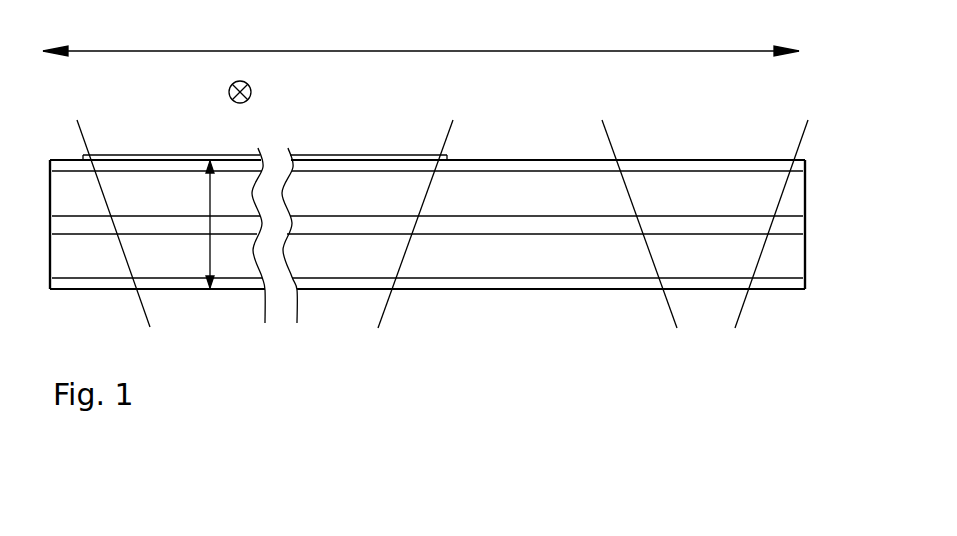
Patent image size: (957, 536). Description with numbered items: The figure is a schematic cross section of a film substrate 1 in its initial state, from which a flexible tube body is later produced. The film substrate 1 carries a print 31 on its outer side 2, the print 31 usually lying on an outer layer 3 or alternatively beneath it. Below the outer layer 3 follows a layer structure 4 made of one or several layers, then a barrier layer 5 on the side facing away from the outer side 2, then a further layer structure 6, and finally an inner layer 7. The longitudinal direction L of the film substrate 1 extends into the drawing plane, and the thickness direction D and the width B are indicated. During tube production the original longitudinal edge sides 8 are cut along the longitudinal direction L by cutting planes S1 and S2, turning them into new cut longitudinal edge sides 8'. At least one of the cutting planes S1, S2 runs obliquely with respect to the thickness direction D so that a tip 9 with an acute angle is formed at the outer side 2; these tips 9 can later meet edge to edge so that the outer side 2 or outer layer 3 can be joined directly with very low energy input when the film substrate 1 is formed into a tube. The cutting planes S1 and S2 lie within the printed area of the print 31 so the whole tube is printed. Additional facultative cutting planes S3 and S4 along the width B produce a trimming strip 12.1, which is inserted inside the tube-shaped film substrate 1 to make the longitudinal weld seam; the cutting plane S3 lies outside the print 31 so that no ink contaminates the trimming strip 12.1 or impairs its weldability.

The film substrate 1 is at (320, 142).
The print 31 is at (335, 160).
The tip 9 is at (95, 158).
The outer side 2 is at (555, 162).
The outer layer 3 is at (683, 168).
The layer structure 4 is at (745, 190).
The barrier layer 5 is at (595, 223).
The layer structure 6 is at (535, 255).
The inner layer 7 is at (673, 282).
The trimming strip 12.1 is at (703, 290).
The longitudinal edge side 8 is at (430, 224).
The cut longitudinal edge side 8' is at (270, 163).
The cutting plane S1 is at (88, 157).
The cutting plane S2 is at (437, 160).
The cutting plane S3 is at (618, 148).
The cutting plane S4 is at (797, 148).
The thickness direction D is at (217, 224).
The width B is at (421, 36).
The longitudinal direction L is at (247, 103).